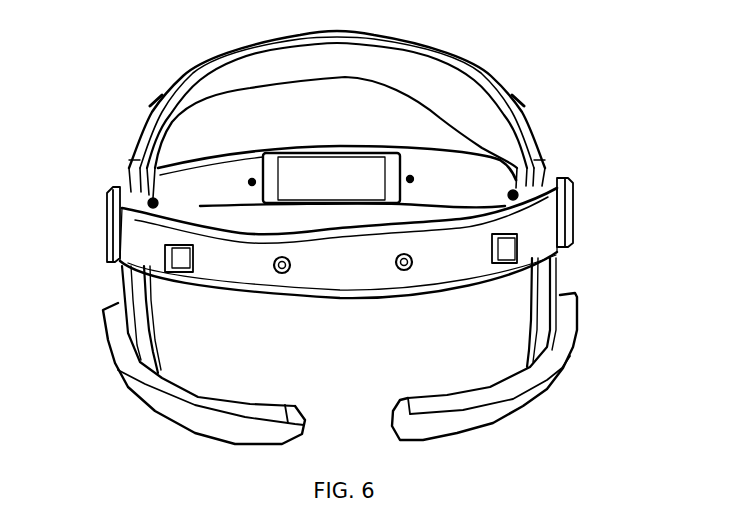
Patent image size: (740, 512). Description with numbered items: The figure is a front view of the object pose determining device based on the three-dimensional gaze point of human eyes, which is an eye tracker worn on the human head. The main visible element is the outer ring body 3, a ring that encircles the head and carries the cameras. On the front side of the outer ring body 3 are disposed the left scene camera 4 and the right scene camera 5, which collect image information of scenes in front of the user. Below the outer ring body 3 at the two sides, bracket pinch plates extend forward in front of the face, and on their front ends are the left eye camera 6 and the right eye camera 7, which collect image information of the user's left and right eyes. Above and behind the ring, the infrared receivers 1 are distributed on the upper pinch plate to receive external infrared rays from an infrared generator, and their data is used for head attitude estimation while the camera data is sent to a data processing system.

The infrared receiver 1 is at (444, 130).
The outer ring body 3 is at (533, 201).
The left scene camera 4 is at (443, 266).
The right scene camera 5 is at (238, 268).
The left eye camera 6 is at (461, 416).
The right eye camera 7 is at (248, 418).